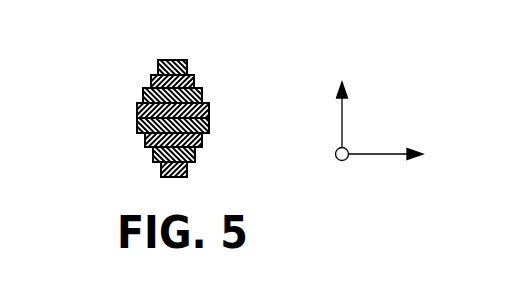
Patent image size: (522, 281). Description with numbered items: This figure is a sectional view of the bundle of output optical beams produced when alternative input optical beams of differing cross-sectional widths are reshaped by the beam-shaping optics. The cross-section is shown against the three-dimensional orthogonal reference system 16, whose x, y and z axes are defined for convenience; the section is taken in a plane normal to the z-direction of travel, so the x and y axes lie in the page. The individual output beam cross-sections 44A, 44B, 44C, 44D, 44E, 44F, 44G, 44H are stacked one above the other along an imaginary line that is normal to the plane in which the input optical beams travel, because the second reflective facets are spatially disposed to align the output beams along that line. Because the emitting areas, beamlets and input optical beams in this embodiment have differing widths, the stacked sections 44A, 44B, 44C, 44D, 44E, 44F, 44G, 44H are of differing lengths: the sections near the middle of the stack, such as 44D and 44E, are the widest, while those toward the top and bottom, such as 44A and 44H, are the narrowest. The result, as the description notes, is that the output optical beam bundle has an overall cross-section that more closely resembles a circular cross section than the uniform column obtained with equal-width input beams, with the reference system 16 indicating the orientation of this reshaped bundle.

The laminated layer 44A is at (158, 64).
The laminated layer 44B is at (194, 80).
The laminated layer 44C is at (143, 96).
The laminated layer 44D is at (209, 111).
The laminated layer 44E is at (137, 125).
The laminated layer 44F is at (202, 140).
The laminated layer 44G is at (153, 155).
The laminated layer 44H is at (187, 170).
The three-dimensional orthogonal reference system 16 is at (403, 78).